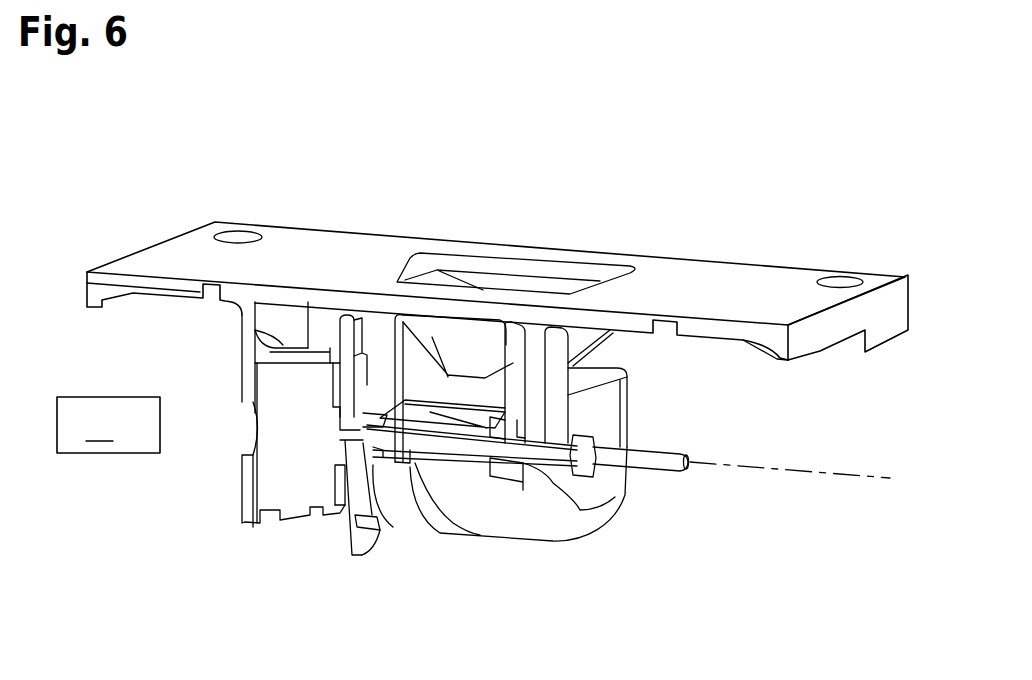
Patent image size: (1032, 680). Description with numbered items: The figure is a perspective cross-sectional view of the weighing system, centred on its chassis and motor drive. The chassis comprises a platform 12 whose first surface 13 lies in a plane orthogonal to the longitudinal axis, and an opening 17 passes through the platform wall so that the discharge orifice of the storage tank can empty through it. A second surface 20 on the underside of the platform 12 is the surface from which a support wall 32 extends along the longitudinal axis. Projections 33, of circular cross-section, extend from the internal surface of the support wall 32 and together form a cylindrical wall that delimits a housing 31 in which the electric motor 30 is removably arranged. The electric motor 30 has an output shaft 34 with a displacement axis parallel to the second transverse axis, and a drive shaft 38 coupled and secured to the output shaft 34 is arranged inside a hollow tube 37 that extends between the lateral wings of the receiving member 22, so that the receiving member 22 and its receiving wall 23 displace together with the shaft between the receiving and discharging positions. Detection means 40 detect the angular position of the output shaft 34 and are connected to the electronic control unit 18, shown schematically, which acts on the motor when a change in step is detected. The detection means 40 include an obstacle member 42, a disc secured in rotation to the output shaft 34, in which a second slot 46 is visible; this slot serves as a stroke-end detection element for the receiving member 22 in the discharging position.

The platform 12 is at (386, 252).
The first surface 13 is at (753, 279).
The opening 17 is at (413, 272).
The electronic control unit 18 is at (253, 427).
The second surface 20 is at (747, 342).
The receiving member 22 is at (635, 421).
The receiving wall 23 is at (527, 527).
The electric motor 30 is at (295, 505).
The housing 31 is at (268, 520).
The support wall 32 is at (250, 488).
The projections 33 is at (270, 352).
The output shaft 34 is at (347, 520).
The hollow tube 37 is at (434, 465).
The drive shaft 38 is at (471, 465).
The detection means 40 is at (335, 333).
The obstacle member 42 is at (368, 542).
The second slot 46 is at (376, 528).